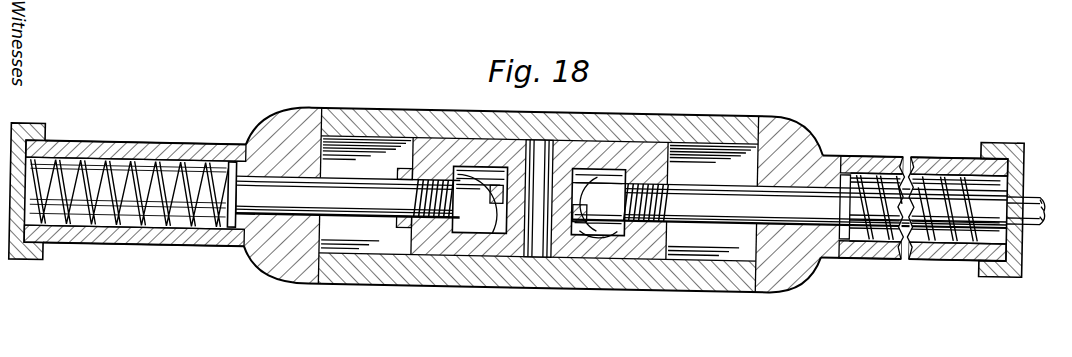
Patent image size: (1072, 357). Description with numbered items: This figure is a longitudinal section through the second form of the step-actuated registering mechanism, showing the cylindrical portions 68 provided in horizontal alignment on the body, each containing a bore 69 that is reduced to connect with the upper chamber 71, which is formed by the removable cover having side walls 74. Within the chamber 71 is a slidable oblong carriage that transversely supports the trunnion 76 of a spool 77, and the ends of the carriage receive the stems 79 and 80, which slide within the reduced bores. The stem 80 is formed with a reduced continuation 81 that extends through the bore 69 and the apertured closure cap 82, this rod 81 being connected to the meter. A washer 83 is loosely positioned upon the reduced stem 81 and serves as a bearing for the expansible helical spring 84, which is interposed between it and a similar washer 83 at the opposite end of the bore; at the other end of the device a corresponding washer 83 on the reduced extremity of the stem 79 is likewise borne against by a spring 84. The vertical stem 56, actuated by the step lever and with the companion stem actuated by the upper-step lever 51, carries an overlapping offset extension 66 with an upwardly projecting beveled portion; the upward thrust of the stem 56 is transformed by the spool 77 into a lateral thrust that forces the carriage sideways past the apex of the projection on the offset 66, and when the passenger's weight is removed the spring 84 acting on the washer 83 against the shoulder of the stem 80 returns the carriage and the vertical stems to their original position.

The lever 51 is at (610, 227).
The stem 56 is at (462, 217).
The offset extension 66 is at (478, 187).
The cylindrical portion 68 is at (857, 167).
The bore 69 is at (138, 160).
The upper chamber 71 is at (352, 153).
The side wall 74 is at (752, 100).
The trunnion 76 is at (537, 247).
The spool 77 is at (512, 220).
The stem 79 is at (265, 188).
The stem 80 is at (733, 213).
The reduced continuation 81 is at (1022, 212).
The closure cap 82 is at (997, 277).
The washer 83 is at (231, 230).
The helical spring 84 is at (135, 210).